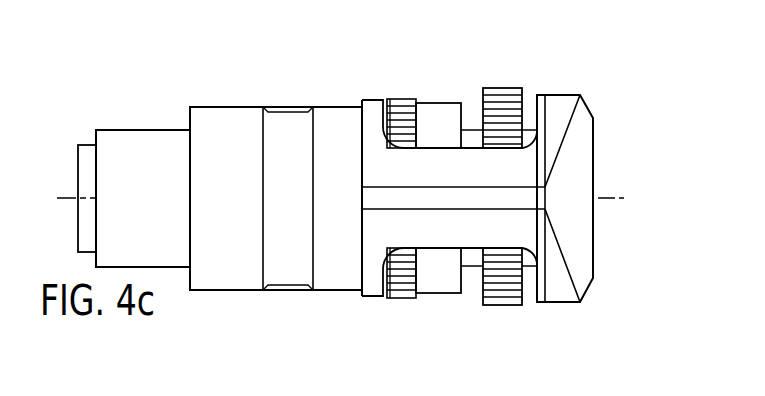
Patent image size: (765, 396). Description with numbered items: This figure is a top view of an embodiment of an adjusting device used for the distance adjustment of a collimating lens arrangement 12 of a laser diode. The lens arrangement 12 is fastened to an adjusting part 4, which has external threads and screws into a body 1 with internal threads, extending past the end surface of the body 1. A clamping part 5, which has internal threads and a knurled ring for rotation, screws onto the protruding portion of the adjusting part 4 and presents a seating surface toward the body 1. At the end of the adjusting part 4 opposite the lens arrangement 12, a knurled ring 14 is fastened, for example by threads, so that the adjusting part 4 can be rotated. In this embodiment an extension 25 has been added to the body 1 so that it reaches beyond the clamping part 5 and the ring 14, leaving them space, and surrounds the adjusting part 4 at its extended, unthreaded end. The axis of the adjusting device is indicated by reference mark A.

The body 1 is at (223, 107).
The adjusting part 4 is at (143, 130).
The clamping part 5 is at (437, 103).
The collimating lens arrangement 12 is at (88, 145).
The knurled ring 14 is at (501, 88).
The extension 25 is at (556, 95).
The axis A is at (612, 196).